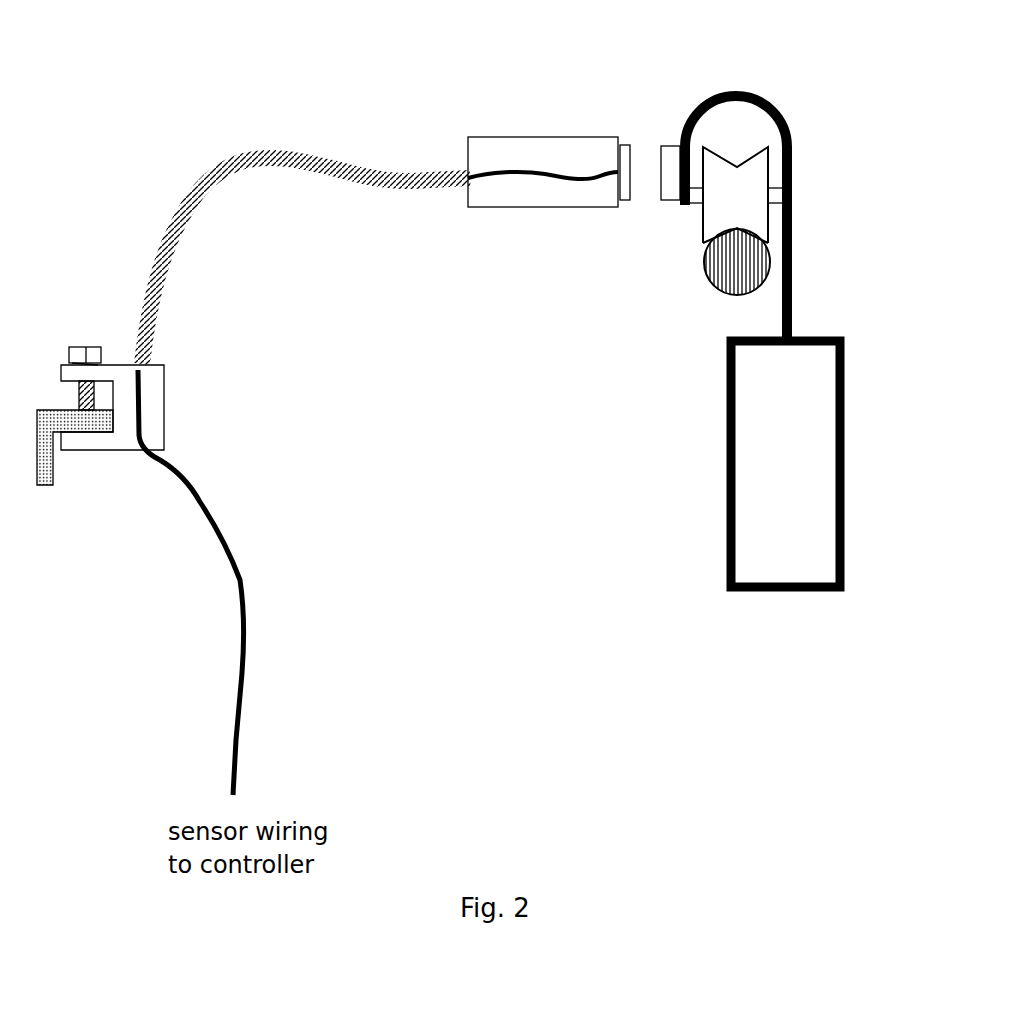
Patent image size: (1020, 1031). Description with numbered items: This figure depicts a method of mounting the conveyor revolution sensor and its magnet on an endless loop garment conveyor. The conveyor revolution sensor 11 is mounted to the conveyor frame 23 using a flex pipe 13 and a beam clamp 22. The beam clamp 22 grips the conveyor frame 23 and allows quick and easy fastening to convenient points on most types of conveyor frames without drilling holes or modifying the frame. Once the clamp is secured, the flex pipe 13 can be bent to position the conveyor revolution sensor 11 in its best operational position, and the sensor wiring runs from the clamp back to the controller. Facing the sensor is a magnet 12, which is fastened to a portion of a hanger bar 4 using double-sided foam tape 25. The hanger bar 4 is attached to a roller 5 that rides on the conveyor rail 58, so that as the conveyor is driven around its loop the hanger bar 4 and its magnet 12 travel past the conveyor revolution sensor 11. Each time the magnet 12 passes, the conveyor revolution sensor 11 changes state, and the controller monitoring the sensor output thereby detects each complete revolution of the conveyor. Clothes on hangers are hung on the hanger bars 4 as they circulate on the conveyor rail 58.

The hanger bar 4 is at (847, 330).
The roller 5 is at (695, 243).
The conveyor revolution sensor 11 is at (627, 205).
The magnet 12 is at (668, 205).
The flex pipe 13 is at (235, 195).
The beam clamp 22 is at (117, 465).
The conveyor frame 23 is at (52, 493).
The double-sided foam tape 25 is at (680, 143).
The conveyor rail 58 is at (713, 302).